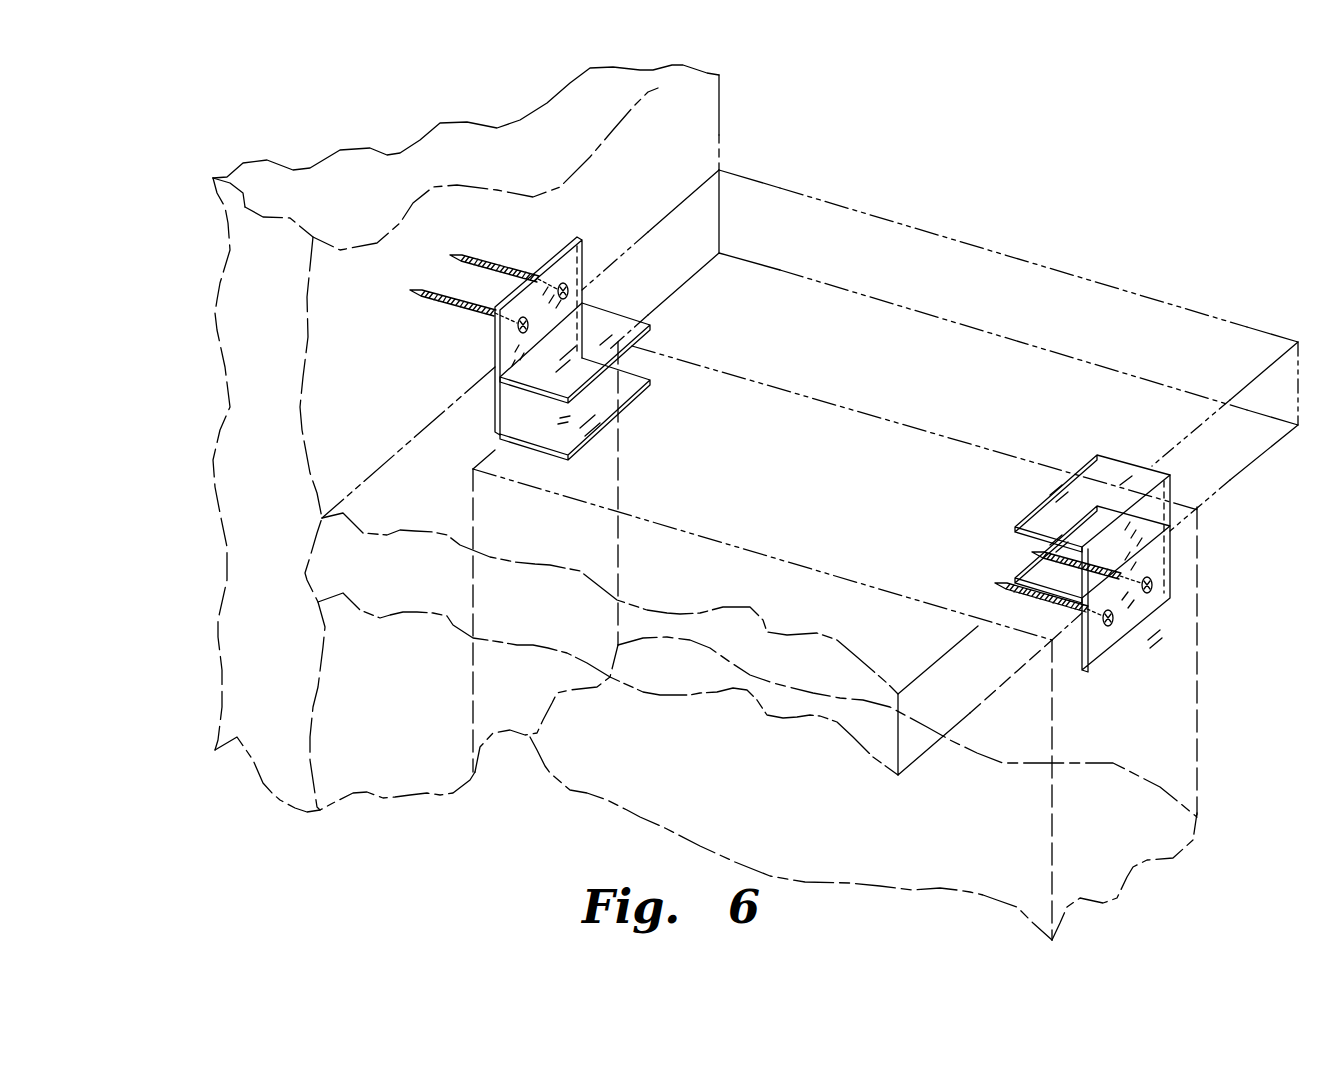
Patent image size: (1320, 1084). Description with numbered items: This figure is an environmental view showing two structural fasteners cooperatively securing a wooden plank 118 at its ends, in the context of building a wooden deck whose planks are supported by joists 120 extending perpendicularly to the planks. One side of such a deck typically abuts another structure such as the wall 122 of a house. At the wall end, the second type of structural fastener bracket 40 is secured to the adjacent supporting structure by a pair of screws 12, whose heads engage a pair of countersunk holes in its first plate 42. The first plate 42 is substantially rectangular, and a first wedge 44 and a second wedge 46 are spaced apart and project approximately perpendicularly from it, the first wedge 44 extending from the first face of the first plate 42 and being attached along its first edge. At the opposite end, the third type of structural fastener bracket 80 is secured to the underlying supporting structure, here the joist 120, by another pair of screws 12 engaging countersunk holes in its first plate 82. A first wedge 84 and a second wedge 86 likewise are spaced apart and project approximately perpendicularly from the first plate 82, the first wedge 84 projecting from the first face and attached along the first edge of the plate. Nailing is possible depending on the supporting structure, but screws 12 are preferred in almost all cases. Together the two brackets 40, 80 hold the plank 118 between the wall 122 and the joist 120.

The screws 12 is at (432, 290).
The structural fastener bracket 40 is at (558, 305).
The first plate 42 is at (493, 363).
The first wedge 44 is at (603, 402).
The second wedge 46 is at (607, 315).
The structural fastener bracket 80 is at (1130, 540).
The first plate 82 is at (1160, 567).
The first wedge 84 is at (1113, 462).
The second wedge 86 is at (1030, 586).
The wooden plank 118 is at (1160, 292).
The joist 120 is at (1197, 723).
The wall 122 is at (719, 120).